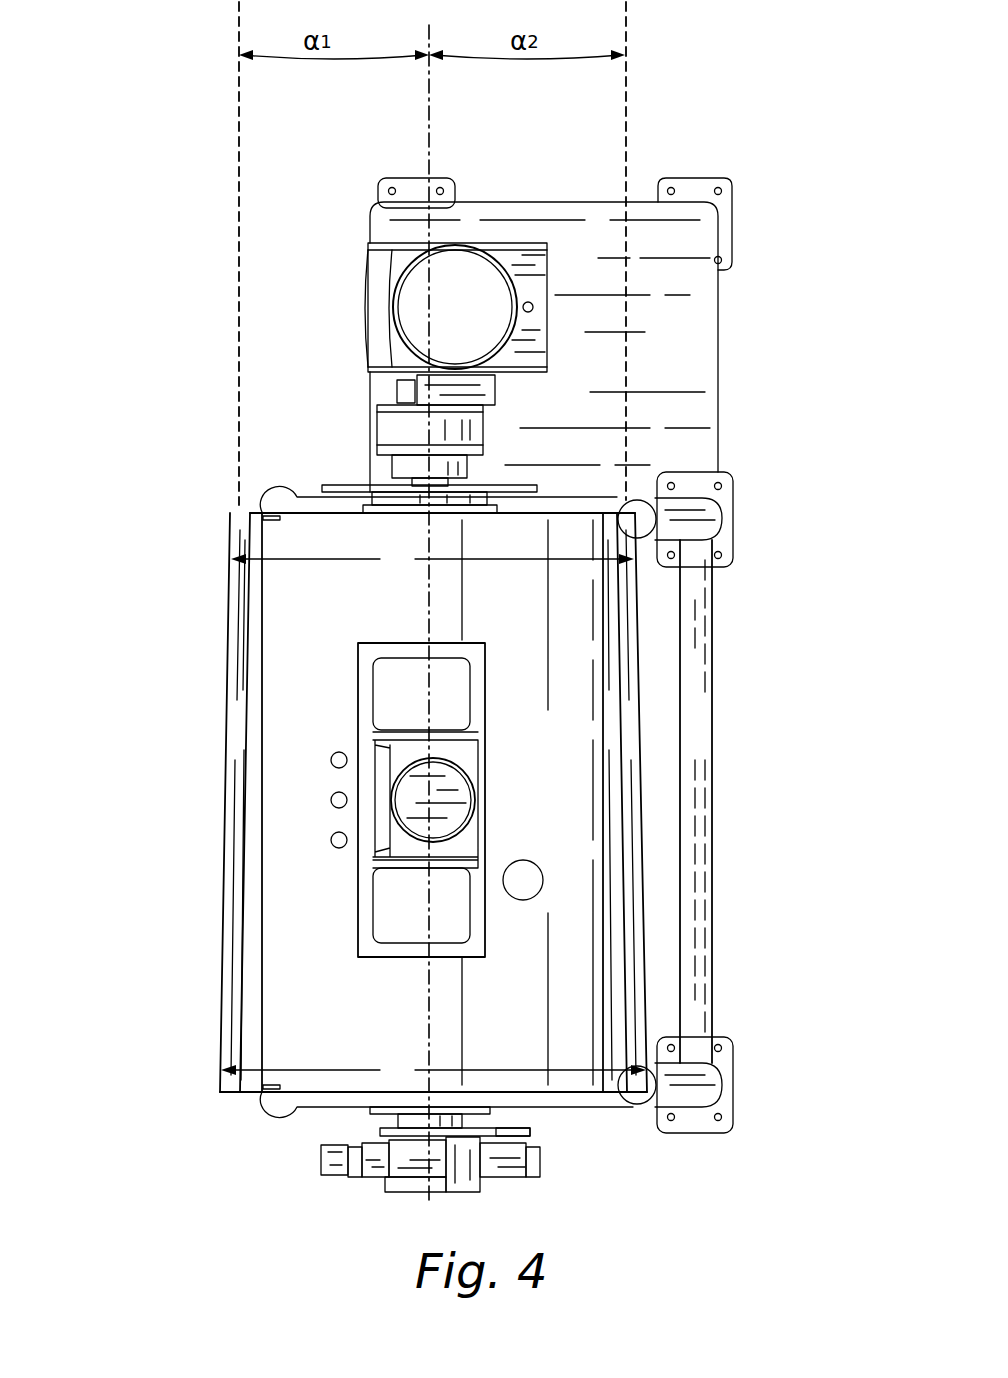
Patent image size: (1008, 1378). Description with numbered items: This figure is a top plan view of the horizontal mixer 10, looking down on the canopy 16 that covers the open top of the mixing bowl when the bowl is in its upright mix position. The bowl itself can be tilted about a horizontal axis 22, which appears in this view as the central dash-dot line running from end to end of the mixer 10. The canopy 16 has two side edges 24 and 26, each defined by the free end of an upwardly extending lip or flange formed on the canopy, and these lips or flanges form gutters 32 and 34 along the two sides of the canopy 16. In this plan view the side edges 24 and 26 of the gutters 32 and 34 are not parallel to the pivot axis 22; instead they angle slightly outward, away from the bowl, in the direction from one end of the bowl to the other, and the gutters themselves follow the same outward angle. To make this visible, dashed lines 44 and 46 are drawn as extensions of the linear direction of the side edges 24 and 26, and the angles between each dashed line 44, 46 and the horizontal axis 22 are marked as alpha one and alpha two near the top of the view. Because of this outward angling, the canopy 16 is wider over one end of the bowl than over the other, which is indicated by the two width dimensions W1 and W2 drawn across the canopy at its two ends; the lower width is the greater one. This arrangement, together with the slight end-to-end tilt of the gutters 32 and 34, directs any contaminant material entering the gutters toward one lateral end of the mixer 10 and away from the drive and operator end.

The horizontal mixer 10 is at (790, 430).
The canopy 16 is at (567, 720).
The horizontal axis 22 is at (431, 134).
The side edge 24 is at (222, 782).
The side edge 26 is at (640, 780).
The gutter 32 is at (225, 915).
The gutter 34 is at (642, 914).
The dashed line 44 is at (237, 133).
The dashed line 46 is at (628, 115).